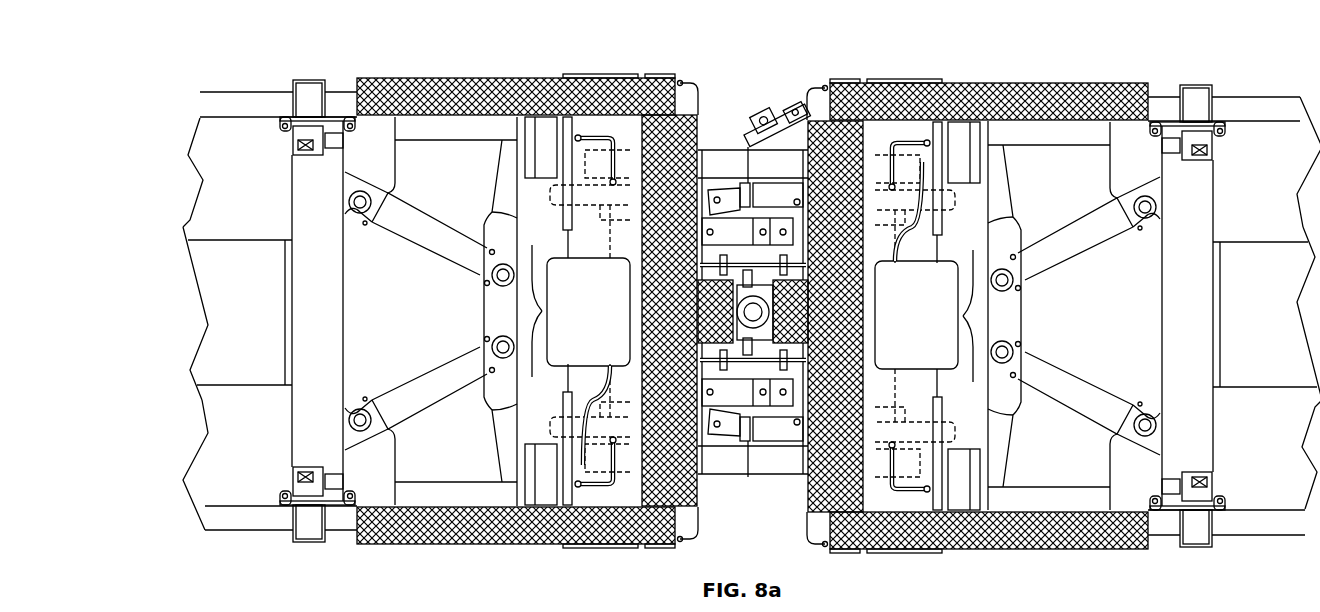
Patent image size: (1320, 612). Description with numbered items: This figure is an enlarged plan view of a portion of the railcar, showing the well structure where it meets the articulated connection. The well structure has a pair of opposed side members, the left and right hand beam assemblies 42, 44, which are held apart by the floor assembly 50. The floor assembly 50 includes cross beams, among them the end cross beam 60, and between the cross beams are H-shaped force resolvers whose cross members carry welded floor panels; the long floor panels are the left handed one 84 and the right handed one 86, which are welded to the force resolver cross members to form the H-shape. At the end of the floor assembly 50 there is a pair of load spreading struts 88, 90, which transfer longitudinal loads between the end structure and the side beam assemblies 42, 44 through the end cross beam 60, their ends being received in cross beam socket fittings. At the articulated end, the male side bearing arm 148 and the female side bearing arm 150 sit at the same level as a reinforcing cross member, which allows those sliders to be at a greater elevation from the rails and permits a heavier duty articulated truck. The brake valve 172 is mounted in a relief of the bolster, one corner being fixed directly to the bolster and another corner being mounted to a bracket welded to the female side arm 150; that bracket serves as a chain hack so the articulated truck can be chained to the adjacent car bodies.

The left hand beam assembly 42 is at (213, 89).
The right hand beam assembly 44 is at (216, 535).
The floor assembly 50 is at (209, 175).
The end cross beam 60 is at (299, 278).
The left handed long floor panel 84 is at (215, 140).
The right handed long floor panel 86 is at (217, 444).
The load spreading strut 88 is at (389, 233).
The load spreading strut 90 is at (399, 381).
The male side bearing arm 148 is at (721, 219).
The female side bearing arm 150 is at (760, 192).
The brake valve 172 is at (773, 111).